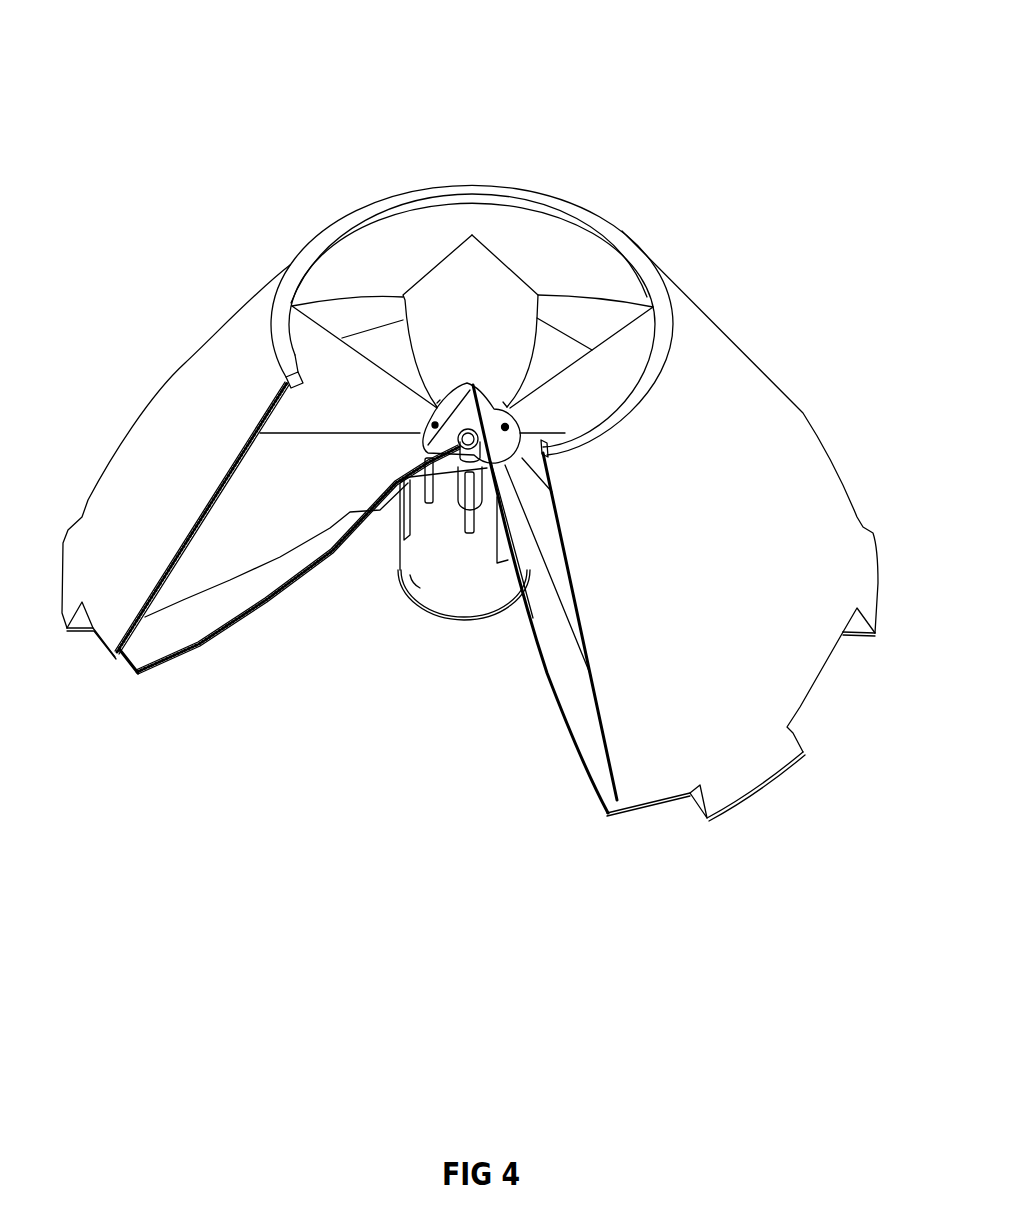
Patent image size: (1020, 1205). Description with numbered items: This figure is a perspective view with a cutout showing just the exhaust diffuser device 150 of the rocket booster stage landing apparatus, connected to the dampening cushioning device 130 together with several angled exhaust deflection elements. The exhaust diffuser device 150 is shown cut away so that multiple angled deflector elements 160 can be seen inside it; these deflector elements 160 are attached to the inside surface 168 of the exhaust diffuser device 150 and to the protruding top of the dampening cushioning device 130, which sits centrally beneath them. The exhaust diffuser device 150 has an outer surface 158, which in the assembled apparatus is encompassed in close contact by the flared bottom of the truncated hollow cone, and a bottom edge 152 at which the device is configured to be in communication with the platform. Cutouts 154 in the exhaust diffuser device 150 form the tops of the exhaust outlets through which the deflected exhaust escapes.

The dampening cushioning device 130 is at (412, 628).
The exhaust diffuser device 150 is at (757, 335).
The bottom edge 152 is at (750, 793).
The cutouts 154 is at (658, 805).
The outer surface 158 is at (487, 192).
The angled deflector elements 160 is at (468, 275).
The inside surface 168 is at (548, 247).